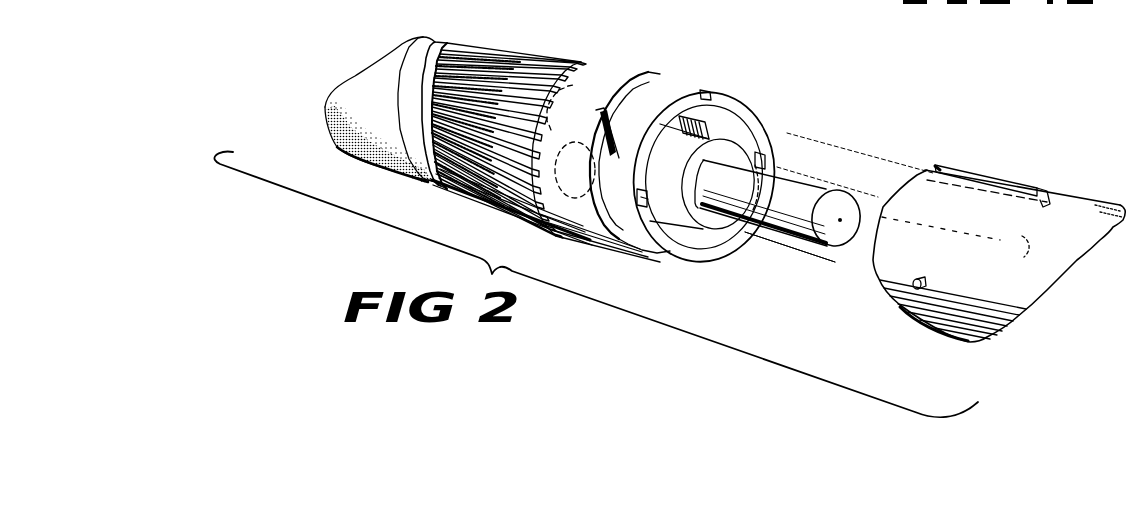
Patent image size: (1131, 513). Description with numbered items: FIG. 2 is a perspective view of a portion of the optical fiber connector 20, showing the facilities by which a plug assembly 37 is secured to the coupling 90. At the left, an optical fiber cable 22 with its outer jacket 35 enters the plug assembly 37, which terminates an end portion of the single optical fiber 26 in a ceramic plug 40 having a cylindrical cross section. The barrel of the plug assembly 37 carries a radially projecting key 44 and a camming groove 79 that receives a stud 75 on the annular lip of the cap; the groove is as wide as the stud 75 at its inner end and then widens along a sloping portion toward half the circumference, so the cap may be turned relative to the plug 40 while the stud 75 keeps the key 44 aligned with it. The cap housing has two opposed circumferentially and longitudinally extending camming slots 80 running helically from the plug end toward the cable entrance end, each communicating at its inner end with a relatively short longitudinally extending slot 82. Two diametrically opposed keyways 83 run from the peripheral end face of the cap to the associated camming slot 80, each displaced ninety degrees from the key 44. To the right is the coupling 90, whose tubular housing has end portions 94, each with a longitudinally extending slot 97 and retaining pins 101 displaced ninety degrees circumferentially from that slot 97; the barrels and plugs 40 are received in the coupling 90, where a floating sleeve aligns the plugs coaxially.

The optical fiber connector 20 is at (900, 135).
The optical fiber cable 22 is at (434, 38).
The optical fiber 26 is at (840, 220).
The outer jacket 35 is at (324, 115).
The plug assembly 37 is at (571, 56).
The plug 40 is at (804, 183).
The key 44 is at (727, 102).
The stud 75 is at (566, 111).
The camming groove 79 is at (575, 170).
The camming slot 80 is at (612, 153).
The longitudinally extending slot 82 is at (631, 80).
The keyway 83 is at (644, 193).
The coupling 90 is at (1089, 195).
The end portion 94 is at (897, 311).
The slot 97 is at (1001, 187).
The retaining pin 101 is at (919, 281).